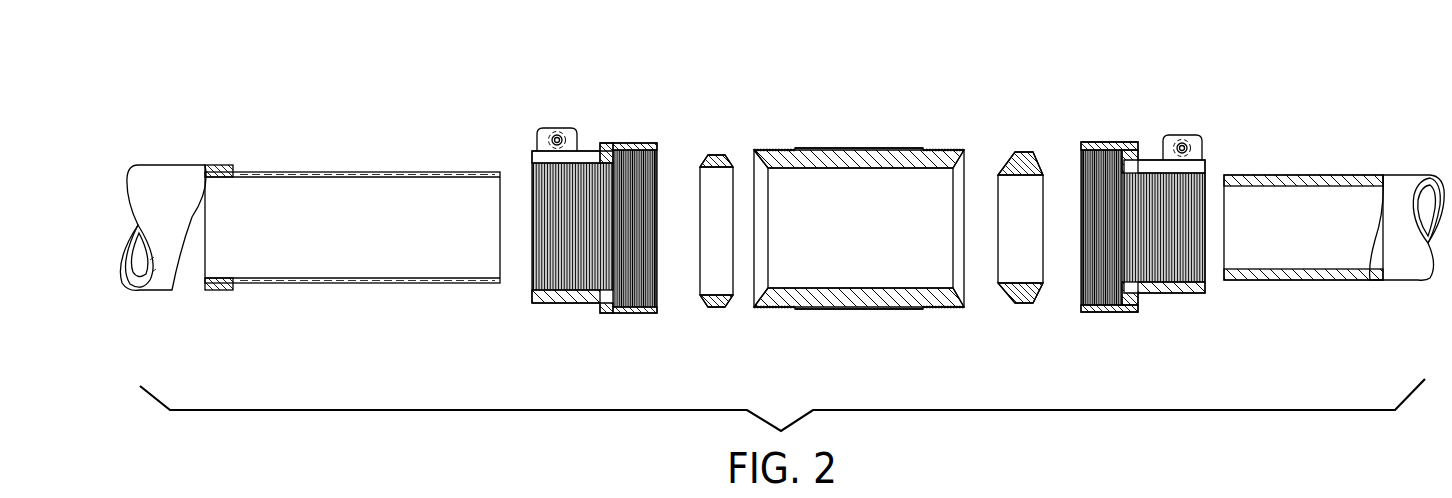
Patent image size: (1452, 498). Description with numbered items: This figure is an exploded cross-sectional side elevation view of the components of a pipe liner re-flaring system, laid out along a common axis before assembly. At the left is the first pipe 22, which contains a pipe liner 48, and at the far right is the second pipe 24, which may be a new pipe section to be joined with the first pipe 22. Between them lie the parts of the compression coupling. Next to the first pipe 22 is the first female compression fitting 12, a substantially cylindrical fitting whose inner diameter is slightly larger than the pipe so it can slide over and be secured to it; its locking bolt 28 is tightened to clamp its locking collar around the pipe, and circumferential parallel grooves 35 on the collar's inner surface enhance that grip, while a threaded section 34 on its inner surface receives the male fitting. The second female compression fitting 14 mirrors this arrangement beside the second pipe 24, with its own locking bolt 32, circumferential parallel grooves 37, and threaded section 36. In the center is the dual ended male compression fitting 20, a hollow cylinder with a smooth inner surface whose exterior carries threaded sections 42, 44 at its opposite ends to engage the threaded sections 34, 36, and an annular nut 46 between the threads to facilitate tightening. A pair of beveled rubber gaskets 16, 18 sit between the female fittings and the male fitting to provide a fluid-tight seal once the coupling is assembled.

The first female compression fitting 12 is at (543, 209).
The second female compression fitting 14 is at (1155, 212).
The beveled rubber gasket 16 is at (717, 158).
The beveled rubber gasket 18 is at (1010, 165).
The dual ended male compression fitting 20 is at (836, 217).
The first pipe 22 is at (190, 163).
The second pipe 24 is at (1403, 175).
The locking bolt 28 is at (555, 132).
The locking bolt 32 is at (1182, 138).
The threaded section 34 is at (633, 290).
The circumferential parallel grooves 35 is at (543, 273).
The threaded section 36 is at (1098, 303).
The circumferential parallel grooves 37 is at (1155, 267).
The threaded section 42 is at (775, 308).
The threaded section 44 is at (942, 308).
The annular nut 46 is at (862, 308).
The pipe liner 48 is at (310, 172).